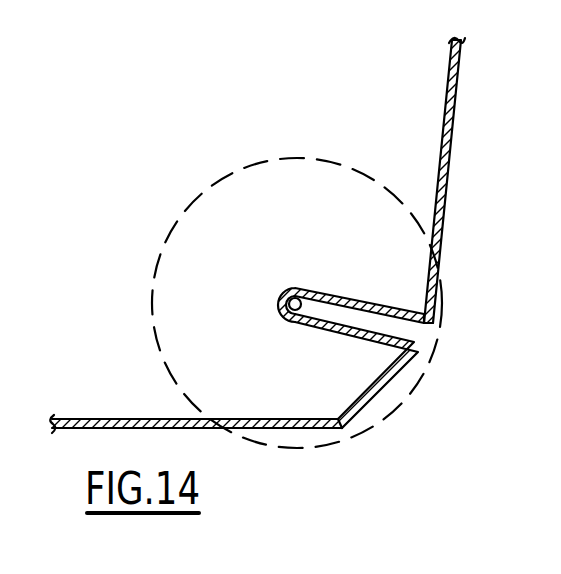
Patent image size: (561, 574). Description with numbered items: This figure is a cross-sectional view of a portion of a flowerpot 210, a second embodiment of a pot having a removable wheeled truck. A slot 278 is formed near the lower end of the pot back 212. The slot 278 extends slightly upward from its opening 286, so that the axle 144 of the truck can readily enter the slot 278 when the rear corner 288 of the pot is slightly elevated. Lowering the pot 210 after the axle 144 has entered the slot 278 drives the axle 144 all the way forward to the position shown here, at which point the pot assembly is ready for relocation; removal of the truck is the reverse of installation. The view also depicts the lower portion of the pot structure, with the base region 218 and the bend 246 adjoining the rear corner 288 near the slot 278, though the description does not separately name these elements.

The second embodiment of a flowerpot 210 is at (247, 134).
The pot back 212 is at (449, 164).
The slot 278 is at (370, 302).
The axle 144 is at (284, 313).
The rear corner 288 is at (385, 392).
The opening 286 is at (423, 331).
The lower bend 246 is at (375, 433).
The base wall 218 is at (262, 431).